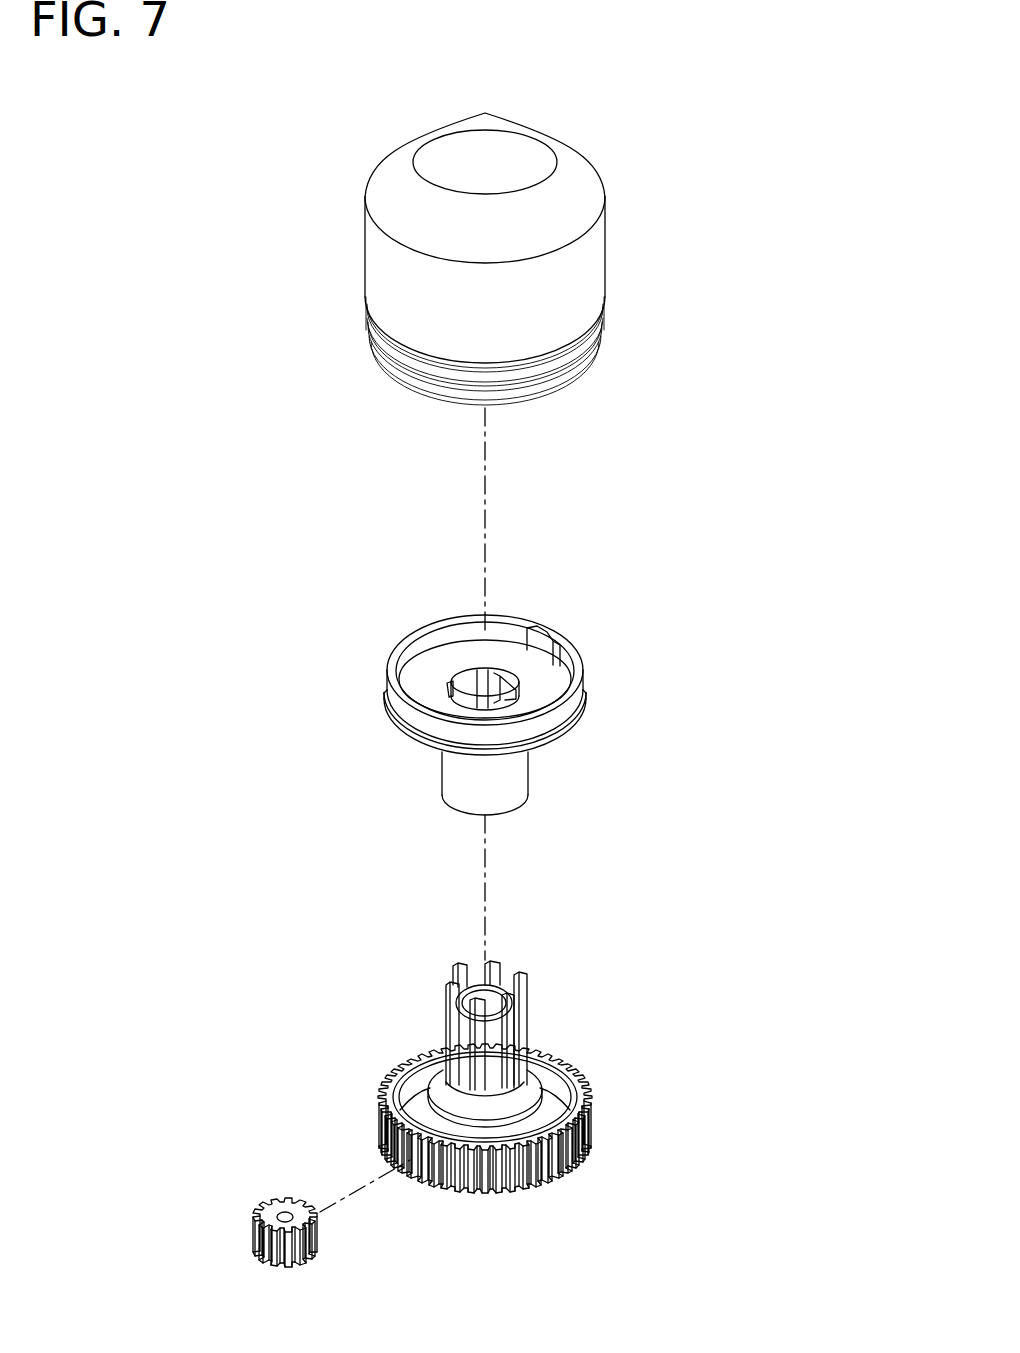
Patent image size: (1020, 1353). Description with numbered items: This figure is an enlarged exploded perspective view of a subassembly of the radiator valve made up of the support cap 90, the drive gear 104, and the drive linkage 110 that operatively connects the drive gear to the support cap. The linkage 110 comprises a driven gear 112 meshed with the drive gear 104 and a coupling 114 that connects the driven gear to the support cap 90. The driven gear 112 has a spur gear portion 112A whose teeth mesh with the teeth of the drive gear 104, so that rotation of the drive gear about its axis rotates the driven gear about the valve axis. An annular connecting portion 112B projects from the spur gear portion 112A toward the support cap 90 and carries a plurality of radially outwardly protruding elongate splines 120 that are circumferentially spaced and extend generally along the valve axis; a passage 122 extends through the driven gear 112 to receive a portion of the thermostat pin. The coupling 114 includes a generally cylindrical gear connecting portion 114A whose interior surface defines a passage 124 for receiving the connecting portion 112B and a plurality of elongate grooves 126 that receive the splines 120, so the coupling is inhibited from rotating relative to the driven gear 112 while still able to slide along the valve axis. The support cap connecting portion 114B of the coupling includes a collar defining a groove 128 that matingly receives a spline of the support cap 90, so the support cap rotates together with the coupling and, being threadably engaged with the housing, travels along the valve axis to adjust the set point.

The support cap 90 is at (598, 256).
The drive linkage 110 is at (185, 914).
The coupling 114 is at (581, 688).
The gear connecting portion 114A is at (509, 778).
The support cap connecting portion 114B is at (420, 643).
The passage 124 is at (495, 708).
The elongate grooves 126 is at (474, 672).
The groove 128 is at (548, 632).
The splines 120 is at (463, 966).
The passage 122 is at (501, 1010).
The driven gear 112 is at (453, 1192).
The spur gear portion 112A is at (577, 1158).
The annular connecting portion 112B is at (557, 1050).
The drive gear 104 is at (265, 1203).